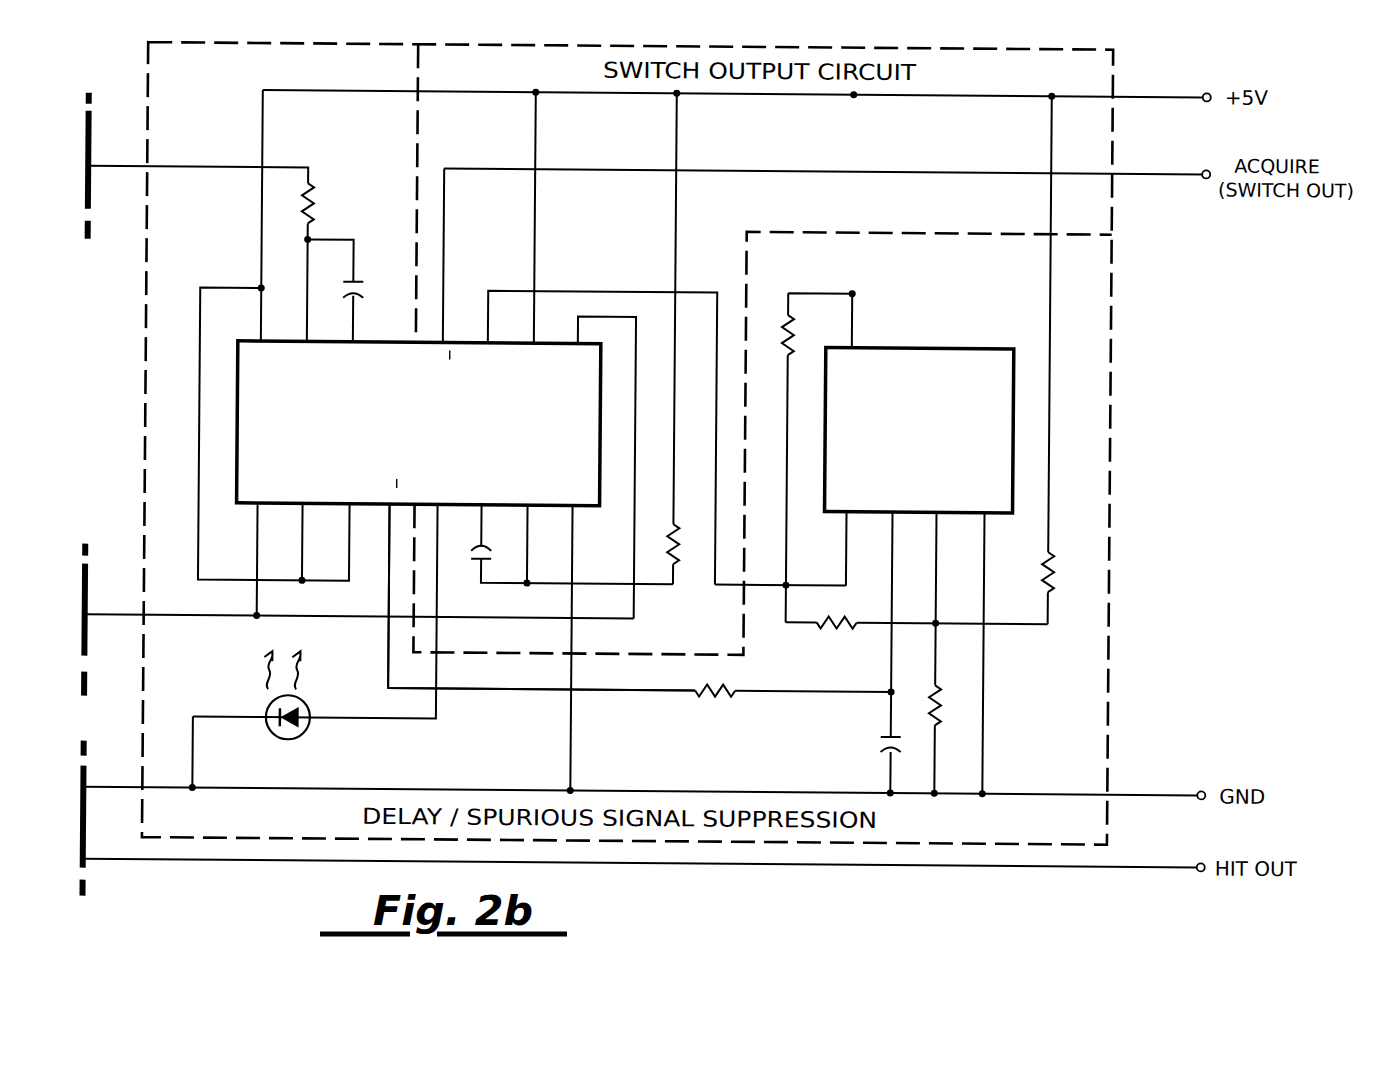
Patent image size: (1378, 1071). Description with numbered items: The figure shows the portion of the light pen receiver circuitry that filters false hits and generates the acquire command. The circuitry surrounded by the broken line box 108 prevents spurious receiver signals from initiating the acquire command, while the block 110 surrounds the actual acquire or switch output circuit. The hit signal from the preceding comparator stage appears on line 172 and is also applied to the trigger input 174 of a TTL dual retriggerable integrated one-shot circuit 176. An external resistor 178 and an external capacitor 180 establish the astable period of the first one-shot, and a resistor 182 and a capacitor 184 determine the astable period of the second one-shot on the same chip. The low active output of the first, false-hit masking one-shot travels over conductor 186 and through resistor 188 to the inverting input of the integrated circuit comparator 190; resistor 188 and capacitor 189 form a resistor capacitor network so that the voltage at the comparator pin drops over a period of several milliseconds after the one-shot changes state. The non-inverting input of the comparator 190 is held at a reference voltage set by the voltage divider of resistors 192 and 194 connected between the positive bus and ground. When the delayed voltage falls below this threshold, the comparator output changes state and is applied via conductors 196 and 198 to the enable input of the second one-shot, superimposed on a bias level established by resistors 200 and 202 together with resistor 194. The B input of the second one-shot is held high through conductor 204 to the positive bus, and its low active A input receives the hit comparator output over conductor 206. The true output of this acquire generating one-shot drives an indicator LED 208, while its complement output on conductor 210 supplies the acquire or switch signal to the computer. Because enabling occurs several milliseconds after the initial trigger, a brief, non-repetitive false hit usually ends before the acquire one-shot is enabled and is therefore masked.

The broken line box 108 is at (258, 49).
The block 110 is at (764, 47).
The line 172 is at (210, 863).
The trigger input 174 is at (258, 541).
The TTL dual retriggerable integrated one-shot circuit 176 is at (394, 440).
The external resistor 178 is at (309, 208).
The external capacitor 180 is at (360, 297).
The resistor 182 is at (677, 548).
The capacitor 184 is at (472, 549).
The conductor 186 is at (500, 690).
The resistor 188 is at (707, 690).
The capacitor 189 is at (885, 736).
The integrated circuit comparator 190 is at (906, 440).
The resistor 192 is at (1058, 572).
The resistor 194 is at (945, 695).
The conductor 196 is at (820, 584).
The conductor 198 is at (691, 291).
The resistor 200 is at (787, 324).
The resistor 202 is at (840, 626).
The conductor 204 is at (535, 221).
The conductor 206 is at (307, 619).
The indicator LED 208 is at (305, 735).
The conductor 210 is at (909, 171).